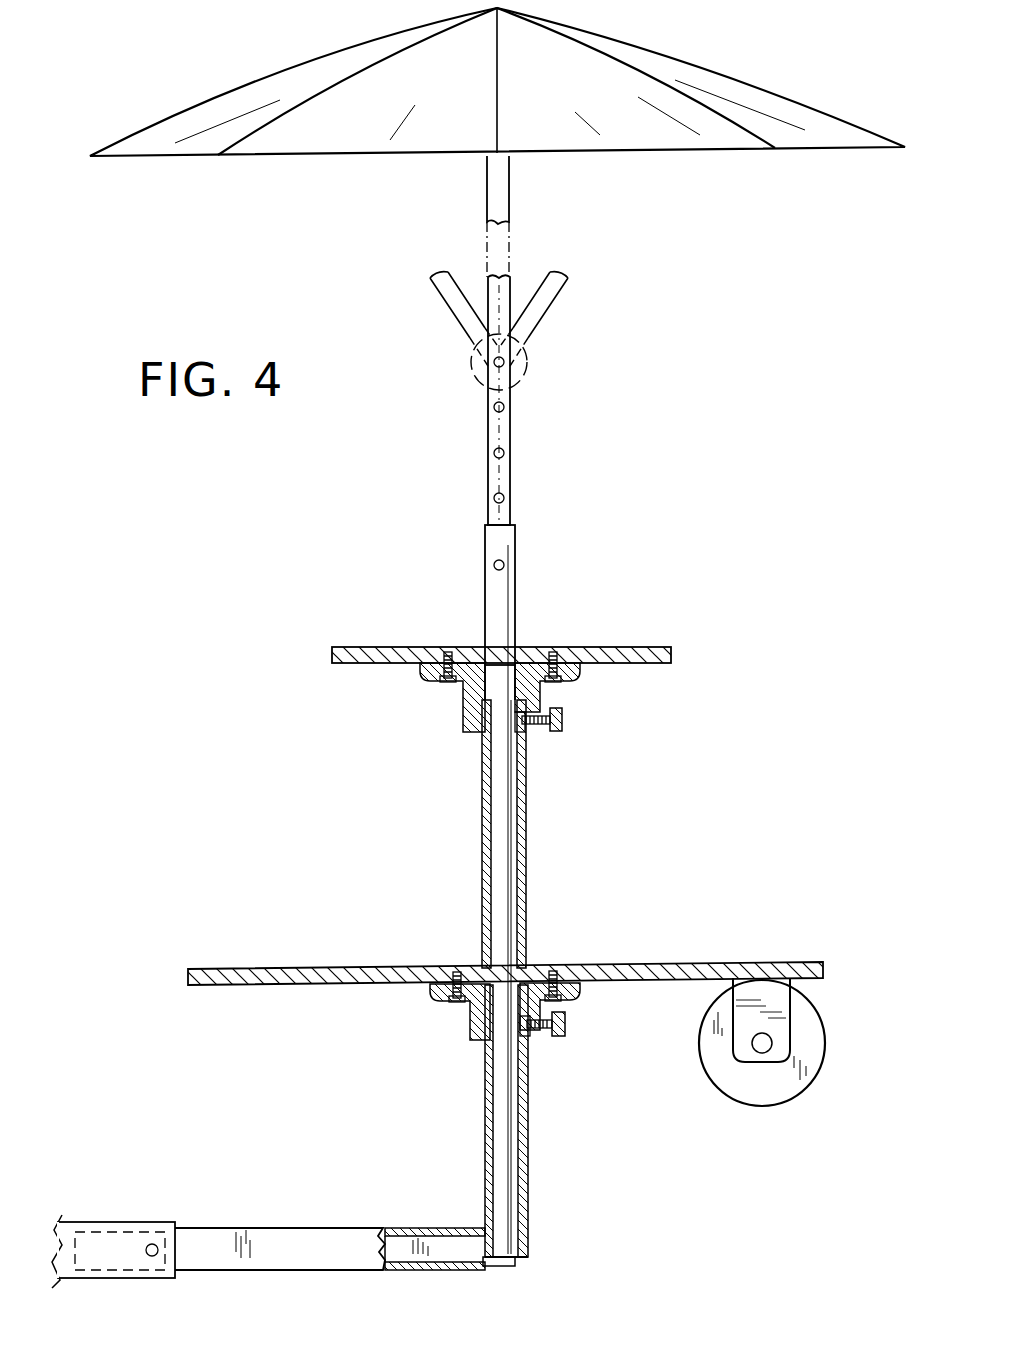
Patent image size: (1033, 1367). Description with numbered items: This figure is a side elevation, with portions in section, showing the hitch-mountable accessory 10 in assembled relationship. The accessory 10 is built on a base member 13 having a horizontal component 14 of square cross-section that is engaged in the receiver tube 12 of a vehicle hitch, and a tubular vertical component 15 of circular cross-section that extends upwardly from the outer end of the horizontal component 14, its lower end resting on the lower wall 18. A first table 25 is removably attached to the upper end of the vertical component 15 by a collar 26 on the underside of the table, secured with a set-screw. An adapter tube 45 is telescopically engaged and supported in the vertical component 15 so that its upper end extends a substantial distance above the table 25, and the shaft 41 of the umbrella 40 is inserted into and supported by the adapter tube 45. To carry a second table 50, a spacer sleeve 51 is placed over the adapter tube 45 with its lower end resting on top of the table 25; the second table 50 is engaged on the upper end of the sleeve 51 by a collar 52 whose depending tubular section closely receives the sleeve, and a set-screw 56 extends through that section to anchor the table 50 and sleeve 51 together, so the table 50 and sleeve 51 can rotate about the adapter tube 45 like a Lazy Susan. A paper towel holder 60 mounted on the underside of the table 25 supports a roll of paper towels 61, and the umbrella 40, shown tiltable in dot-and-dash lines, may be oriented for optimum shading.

The hitch-mountable accessory 10 is at (322, 877).
The receiver tube 12 is at (158, 1220).
The base member 13 is at (379, 1218).
The horizontal component 14 is at (285, 1225).
The vertical component 15 is at (532, 1123).
The lower wall 18 is at (505, 1272).
The first table 25 is at (682, 960).
The collar 26 is at (436, 1024).
The umbrella 40 is at (650, 154).
The shaft 41 is at (510, 477).
The adapter tube 45 is at (515, 588).
The second table 50 is at (660, 630).
The spacer sleeve 51 is at (481, 818).
The collar 52 is at (458, 690).
The set-screw 56 is at (565, 728).
The paper towel holder 60 is at (740, 1028).
The roll of paper towels 61 is at (718, 1098).